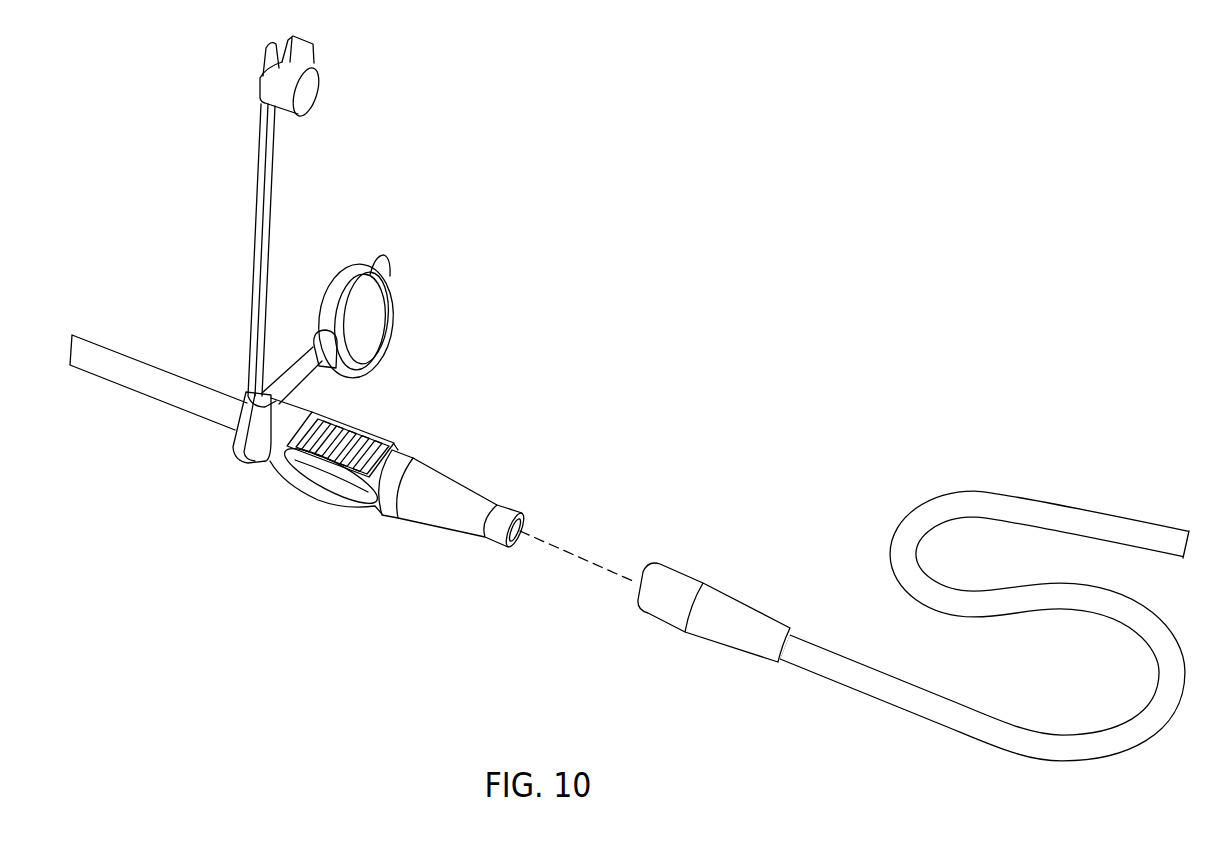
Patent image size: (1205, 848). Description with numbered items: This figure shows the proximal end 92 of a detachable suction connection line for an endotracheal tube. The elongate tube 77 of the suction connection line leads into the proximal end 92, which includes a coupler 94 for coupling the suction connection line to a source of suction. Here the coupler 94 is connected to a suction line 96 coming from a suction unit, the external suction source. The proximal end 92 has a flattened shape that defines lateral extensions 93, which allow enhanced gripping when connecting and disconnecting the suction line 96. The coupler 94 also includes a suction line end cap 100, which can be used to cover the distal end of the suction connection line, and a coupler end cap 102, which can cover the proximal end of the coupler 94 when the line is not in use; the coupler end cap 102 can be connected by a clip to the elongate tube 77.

The elongate tube 77 is at (122, 373).
The proximal end 92 is at (290, 483).
The lateral extensions 93 is at (362, 425).
The coupler 94 is at (423, 467).
The suction line 96 is at (832, 665).
The suction line end cap 100 is at (378, 292).
The coupler end cap 102 is at (292, 77).